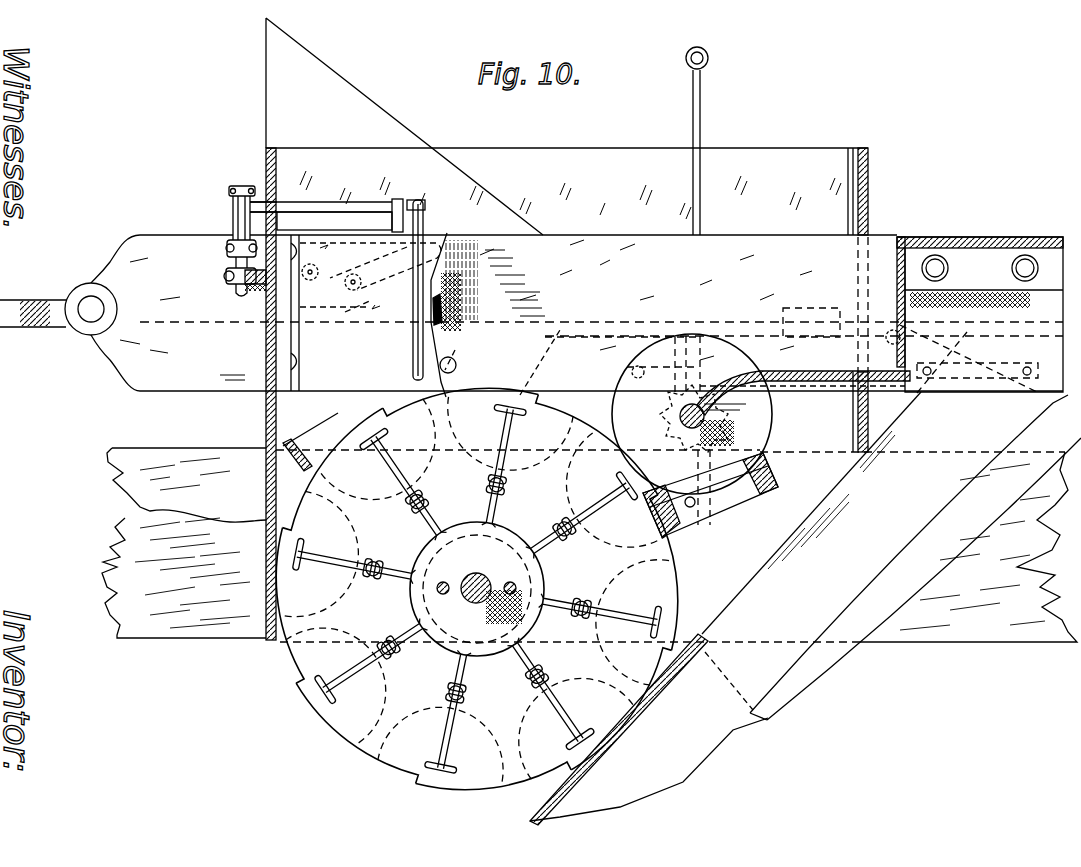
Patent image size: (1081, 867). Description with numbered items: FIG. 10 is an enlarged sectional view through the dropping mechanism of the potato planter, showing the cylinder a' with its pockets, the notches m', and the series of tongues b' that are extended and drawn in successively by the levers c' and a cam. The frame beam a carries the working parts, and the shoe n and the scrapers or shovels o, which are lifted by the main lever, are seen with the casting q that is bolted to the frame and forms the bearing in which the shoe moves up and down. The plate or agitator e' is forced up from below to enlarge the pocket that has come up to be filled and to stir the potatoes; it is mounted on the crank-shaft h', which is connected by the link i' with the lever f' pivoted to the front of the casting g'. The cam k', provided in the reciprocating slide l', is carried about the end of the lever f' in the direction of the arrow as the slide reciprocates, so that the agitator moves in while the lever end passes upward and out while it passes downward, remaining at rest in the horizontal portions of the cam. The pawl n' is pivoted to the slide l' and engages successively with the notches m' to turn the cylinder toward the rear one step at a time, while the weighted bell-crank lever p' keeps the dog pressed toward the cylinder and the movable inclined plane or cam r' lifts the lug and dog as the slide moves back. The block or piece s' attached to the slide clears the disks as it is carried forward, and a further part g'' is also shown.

The frame beam a is at (589, 545).
The cylinder a' is at (477, 589).
The tongues b' is at (421, 374).
The levers c' is at (372, 352).
The plate or agitator e' is at (431, 286).
The lever f' is at (228, 272).
The casting g' is at (564, 394).
The arm g'' is at (803, 372).
The crank-shaft h' is at (321, 204).
The link i' is at (242, 213).
The cam k' is at (325, 313).
The reciprocating slide l' is at (349, 313).
The notches m' is at (477, 589).
The shoe n is at (725, 608).
The pawl n' is at (658, 429).
The scrapers or shovels o is at (667, 533).
The weighted bell-crank lever p' is at (790, 309).
The casting q is at (828, 687).
The movable inclined plane or cam r' is at (969, 358).
The block or piece s' is at (965, 314).